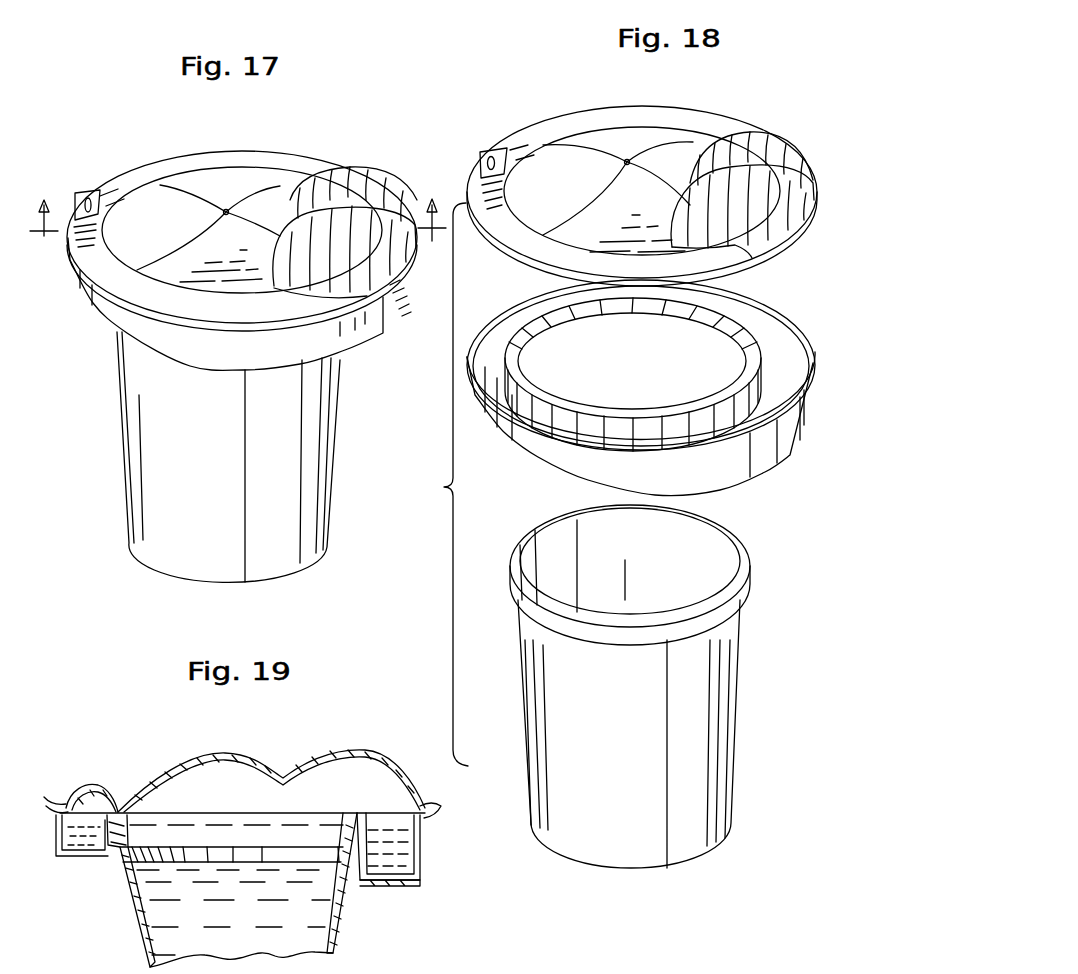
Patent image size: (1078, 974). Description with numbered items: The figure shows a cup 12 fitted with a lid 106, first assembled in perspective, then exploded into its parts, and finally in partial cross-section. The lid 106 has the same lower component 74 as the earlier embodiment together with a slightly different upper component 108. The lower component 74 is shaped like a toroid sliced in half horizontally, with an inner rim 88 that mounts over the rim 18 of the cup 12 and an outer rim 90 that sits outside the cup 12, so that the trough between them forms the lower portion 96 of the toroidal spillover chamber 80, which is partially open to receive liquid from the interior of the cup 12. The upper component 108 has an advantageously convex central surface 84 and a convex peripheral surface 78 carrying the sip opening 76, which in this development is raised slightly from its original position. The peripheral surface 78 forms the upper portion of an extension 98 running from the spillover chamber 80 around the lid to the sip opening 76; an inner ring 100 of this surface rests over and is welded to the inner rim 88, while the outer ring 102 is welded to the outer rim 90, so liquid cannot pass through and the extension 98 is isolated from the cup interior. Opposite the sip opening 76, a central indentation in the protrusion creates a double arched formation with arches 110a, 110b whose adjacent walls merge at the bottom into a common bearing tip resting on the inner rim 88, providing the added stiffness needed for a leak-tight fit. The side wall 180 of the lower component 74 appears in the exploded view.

In FIG. 17, the cup 12 is at (127, 483).
In FIG. 18, the cup 12 is at (736, 748).
In FIG. 18, the rim 18 is at (745, 548).
In FIG. 19, the rim 18 is at (120, 855).
In FIG. 18, the lower component 74 is at (498, 305).
In FIG. 17, the sip opening 76 is at (82, 202).
In FIG. 18, the sip opening 76 is at (488, 160).
In FIG. 17, the convex peripheral surface 78 is at (72, 300).
In FIG. 19, the toroidal spillover chamber 80 is at (418, 858).
In FIG. 17, the central surface 84 is at (148, 190).
In FIG. 18, the central surface 84 is at (545, 165).
In FIG. 19, the central surface 84 is at (150, 770).
In FIG. 18, the inner rim 88 is at (730, 330).
In FIG. 18, the outer rim 90 is at (522, 426).
In FIG. 19, the outer rim 90 is at (66, 848).
In FIG. 19, the lower portion of the spillover chamber 96 is at (385, 884).
In FIG. 17, the extension 98 is at (112, 325).
In FIG. 18, the extension 98 is at (530, 463).
In FIG. 18, the inner ring 100 is at (588, 130).
In FIG. 19, the inner ring 100 is at (115, 800).
In FIG. 18, the outer ring 102 is at (615, 108).
In FIG. 19, the outer ring 102 is at (57, 800).
In FIG. 17, the lid 106 is at (202, 141).
In FIG. 18, the upper component 108 is at (666, 98).
In FIG. 17, the arch 110a is at (362, 175).
In FIG. 18, the arch 110a is at (758, 140).
In FIG. 17, the arch 110b is at (358, 330).
In FIG. 18, the arch 110b is at (776, 255).
In FIG. 18, the ring side wall 180 is at (765, 458).